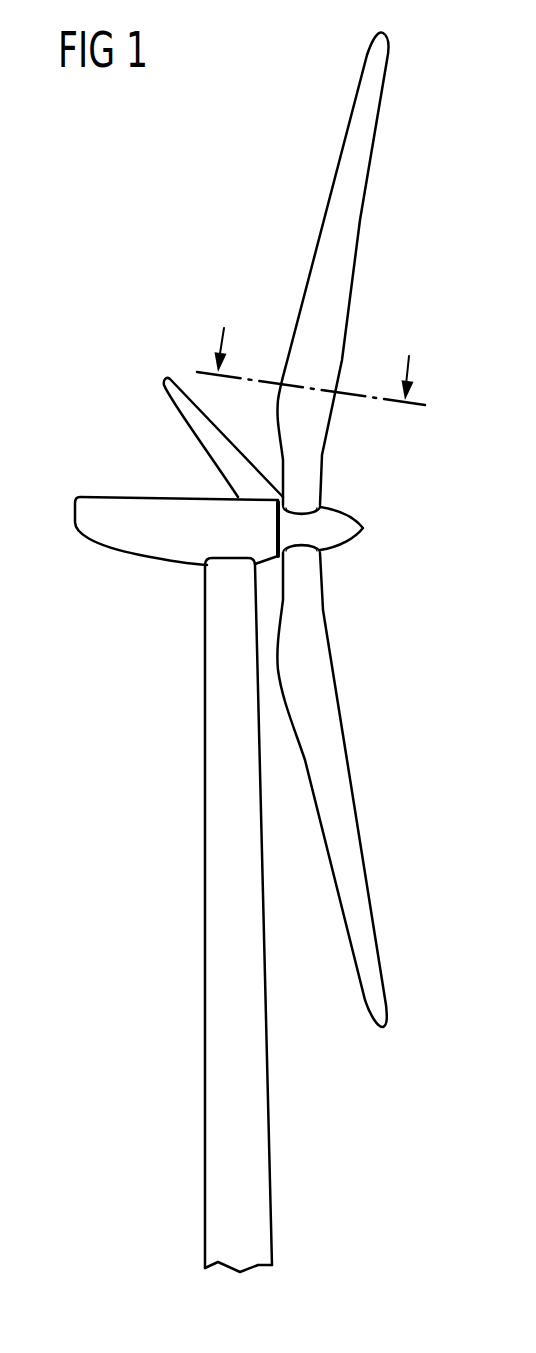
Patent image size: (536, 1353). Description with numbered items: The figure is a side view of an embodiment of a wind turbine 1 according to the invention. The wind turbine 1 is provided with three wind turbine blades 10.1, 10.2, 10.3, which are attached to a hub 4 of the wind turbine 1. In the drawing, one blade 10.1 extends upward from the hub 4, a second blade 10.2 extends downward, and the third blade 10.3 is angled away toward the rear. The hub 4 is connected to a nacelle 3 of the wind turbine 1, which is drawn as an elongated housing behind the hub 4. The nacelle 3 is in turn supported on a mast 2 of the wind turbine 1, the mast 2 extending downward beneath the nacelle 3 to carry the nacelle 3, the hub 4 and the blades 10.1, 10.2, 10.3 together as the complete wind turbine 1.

The wind turbine 1 is at (108, 320).
The mast 2 is at (215, 903).
The nacelle 3 is at (122, 497).
The hub 4 is at (352, 528).
The wind turbine blade 10.1 is at (340, 266).
The wind turbine blade 10.2 is at (327, 712).
The wind turbine blade 10.3 is at (170, 390).